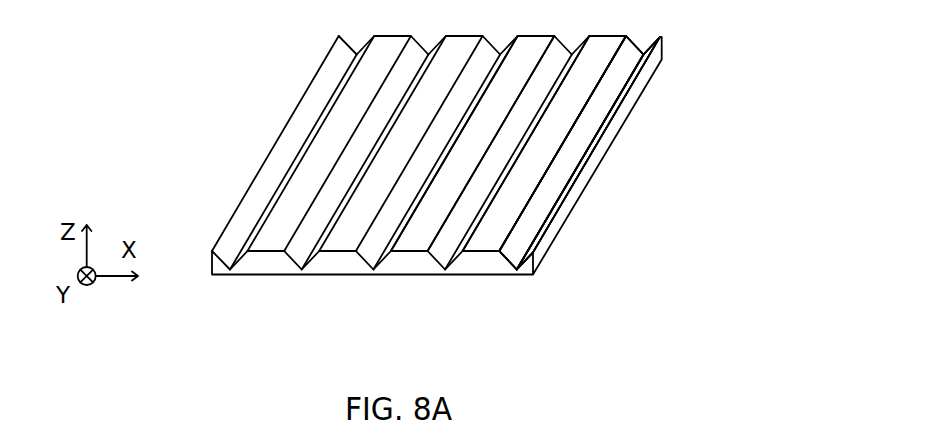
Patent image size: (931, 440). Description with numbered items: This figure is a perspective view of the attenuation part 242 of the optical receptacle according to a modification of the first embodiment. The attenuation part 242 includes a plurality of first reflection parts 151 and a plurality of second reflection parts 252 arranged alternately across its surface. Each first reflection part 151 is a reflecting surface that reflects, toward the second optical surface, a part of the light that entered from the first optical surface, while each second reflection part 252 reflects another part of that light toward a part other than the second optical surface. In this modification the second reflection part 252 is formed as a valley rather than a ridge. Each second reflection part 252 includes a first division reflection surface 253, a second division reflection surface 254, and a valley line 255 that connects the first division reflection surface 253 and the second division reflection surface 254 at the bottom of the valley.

The attenuation part 242 is at (741, 65).
The first reflection part 151 is at (534, 143).
The second reflection part 252 is at (418, 328).
The first division reflection surface 253 is at (534, 256).
The second division reflection surface 254 is at (516, 242).
The valley line 255 is at (537, 252).